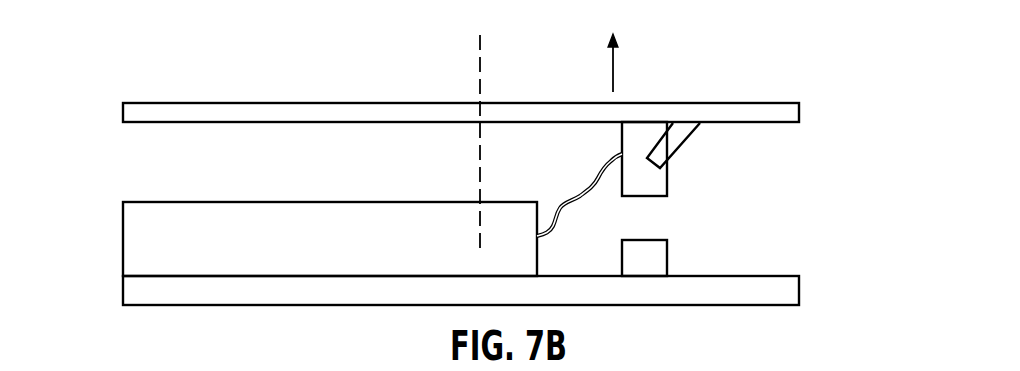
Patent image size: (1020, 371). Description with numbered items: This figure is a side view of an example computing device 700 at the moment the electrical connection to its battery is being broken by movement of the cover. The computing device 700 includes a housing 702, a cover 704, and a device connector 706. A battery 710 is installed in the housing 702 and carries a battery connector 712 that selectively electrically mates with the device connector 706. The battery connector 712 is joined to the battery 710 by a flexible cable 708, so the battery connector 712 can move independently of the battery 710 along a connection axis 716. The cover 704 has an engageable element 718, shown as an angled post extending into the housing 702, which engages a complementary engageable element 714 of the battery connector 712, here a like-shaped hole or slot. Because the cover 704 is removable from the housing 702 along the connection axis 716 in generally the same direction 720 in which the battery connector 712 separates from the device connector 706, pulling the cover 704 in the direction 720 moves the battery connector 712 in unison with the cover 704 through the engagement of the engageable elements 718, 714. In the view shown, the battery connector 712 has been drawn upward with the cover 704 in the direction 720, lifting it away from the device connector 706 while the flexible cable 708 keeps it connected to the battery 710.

The computing device 700 is at (161, 70).
The housing 702 is at (799, 291).
The cover 704 is at (799, 112).
The device connector 706 is at (668, 270).
The flexible cable 708 is at (553, 234).
The battery 710 is at (123, 229).
The battery connector 712 is at (668, 186).
The battery engageable element 714 is at (663, 161).
The connection axis 716 is at (503, 143).
The cover engageable element 718 is at (690, 136).
The direction 720 is at (593, 63).